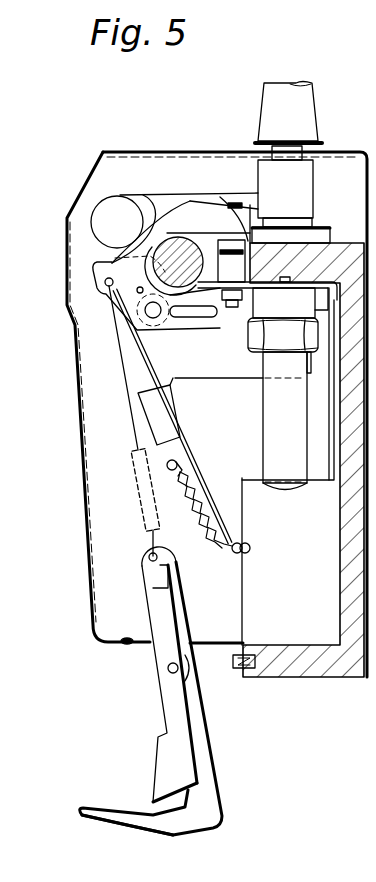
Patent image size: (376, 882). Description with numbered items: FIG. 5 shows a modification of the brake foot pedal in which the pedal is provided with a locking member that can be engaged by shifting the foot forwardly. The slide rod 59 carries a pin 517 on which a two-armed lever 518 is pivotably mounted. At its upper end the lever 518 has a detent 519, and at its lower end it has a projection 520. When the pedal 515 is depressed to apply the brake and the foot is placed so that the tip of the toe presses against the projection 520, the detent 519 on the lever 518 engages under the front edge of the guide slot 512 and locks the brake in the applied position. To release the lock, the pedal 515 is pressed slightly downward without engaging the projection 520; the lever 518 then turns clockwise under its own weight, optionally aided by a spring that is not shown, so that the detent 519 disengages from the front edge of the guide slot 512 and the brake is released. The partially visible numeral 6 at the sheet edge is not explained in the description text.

The housing 6 is at (221, 495).
The slide rod 59 is at (152, 572).
The guide slot 512 is at (150, 647).
The pedal 515 is at (128, 820).
The pin 517 is at (171, 673).
The two-armed lever 518 is at (182, 760).
The detent 519 is at (160, 587).
The projection 520 is at (160, 775).